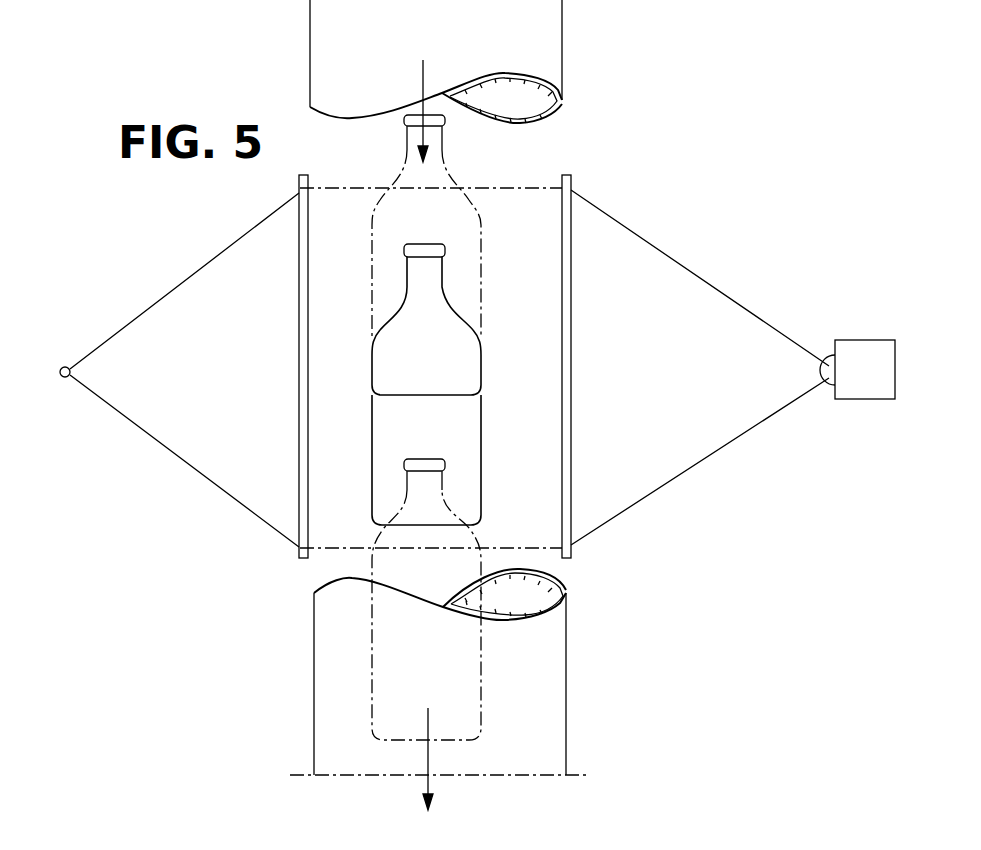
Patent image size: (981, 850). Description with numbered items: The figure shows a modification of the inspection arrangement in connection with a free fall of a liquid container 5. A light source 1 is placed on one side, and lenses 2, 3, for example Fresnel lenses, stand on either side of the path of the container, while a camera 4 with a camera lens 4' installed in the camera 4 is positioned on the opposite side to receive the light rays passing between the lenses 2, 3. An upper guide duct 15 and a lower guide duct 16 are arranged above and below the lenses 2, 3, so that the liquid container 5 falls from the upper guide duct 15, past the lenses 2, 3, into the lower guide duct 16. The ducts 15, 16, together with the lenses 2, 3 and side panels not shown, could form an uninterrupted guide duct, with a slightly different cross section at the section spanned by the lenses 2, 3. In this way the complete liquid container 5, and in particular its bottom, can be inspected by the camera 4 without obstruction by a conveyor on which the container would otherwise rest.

The light source 1 is at (65, 378).
The lens 2 is at (299, 450).
The lens 3 is at (571, 430).
The camera 4 is at (733, 367).
The camera lens 4' is at (815, 401).
The liquid container 5 is at (372, 373).
The upper guide duct 15 is at (552, 62).
The lower guide duct 16 is at (550, 718).